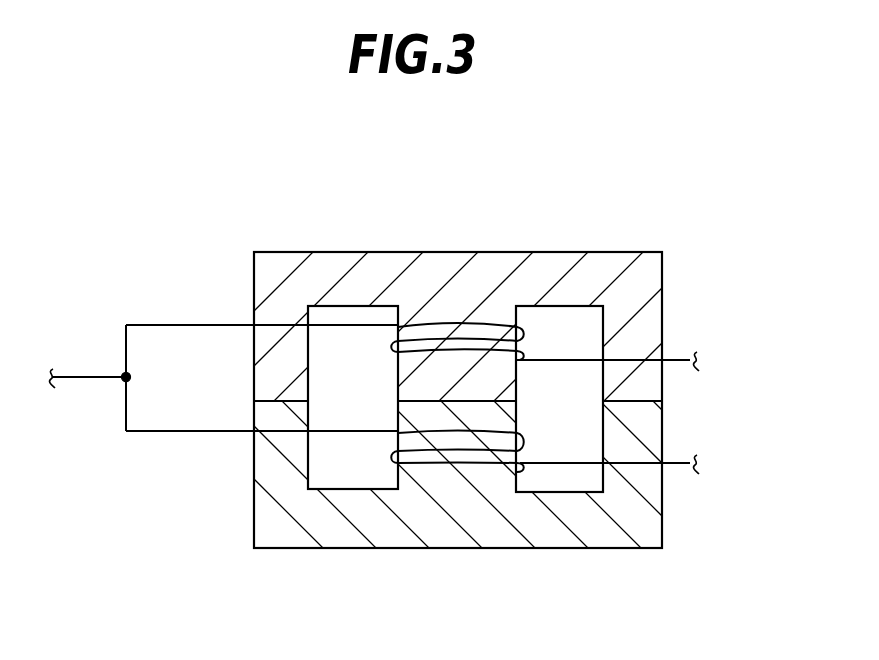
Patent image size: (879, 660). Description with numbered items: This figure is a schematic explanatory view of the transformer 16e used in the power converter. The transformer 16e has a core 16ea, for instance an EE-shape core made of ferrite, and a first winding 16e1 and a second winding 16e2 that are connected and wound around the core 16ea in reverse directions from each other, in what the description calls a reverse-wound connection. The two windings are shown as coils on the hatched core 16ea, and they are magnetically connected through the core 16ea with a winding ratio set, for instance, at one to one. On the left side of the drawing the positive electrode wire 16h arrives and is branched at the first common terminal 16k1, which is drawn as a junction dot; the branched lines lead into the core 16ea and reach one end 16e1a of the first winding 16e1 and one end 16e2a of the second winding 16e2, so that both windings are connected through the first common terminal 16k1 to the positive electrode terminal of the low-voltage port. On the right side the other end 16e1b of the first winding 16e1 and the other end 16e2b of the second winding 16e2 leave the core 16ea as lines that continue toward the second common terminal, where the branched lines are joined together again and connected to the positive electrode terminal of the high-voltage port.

The transformer 16e is at (482, 346).
The core 16ea is at (636, 292).
The first winding 16e1 is at (457, 323).
The one end of first winding 16e1a is at (350, 325).
The other end of first winding 16e1b is at (560, 360).
The second winding 16e2 is at (458, 465).
The one end of second winding 16e2a is at (355, 433).
The other end of second winding 16e2b is at (558, 466).
The positive electrode wire 16h is at (89, 376).
The first common terminal 16k1 is at (122, 383).